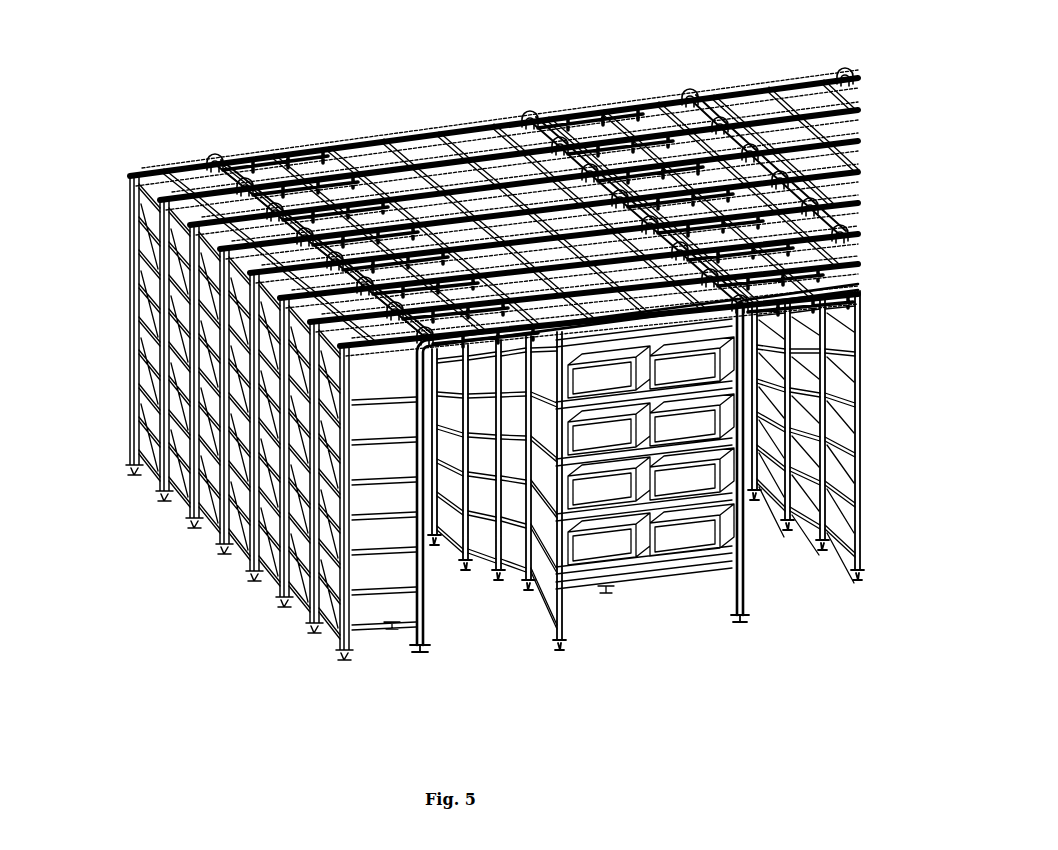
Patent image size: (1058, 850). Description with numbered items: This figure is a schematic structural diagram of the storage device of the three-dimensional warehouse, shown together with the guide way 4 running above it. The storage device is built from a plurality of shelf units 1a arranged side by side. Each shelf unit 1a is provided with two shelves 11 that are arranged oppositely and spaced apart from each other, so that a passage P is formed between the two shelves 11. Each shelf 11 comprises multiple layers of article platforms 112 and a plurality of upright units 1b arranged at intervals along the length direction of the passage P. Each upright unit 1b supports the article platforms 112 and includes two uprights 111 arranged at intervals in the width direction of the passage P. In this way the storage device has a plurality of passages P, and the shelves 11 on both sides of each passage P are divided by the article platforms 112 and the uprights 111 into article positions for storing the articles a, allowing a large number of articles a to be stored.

The shelf unit 1a is at (590, 110).
The guide way 4 is at (270, 150).
The shelf 11 is at (196, 445).
The article a is at (240, 558).
The upright unit 1b is at (336, 640).
The upright 111 is at (422, 652).
The article platform 112 is at (605, 590).
The passage P is at (490, 625).